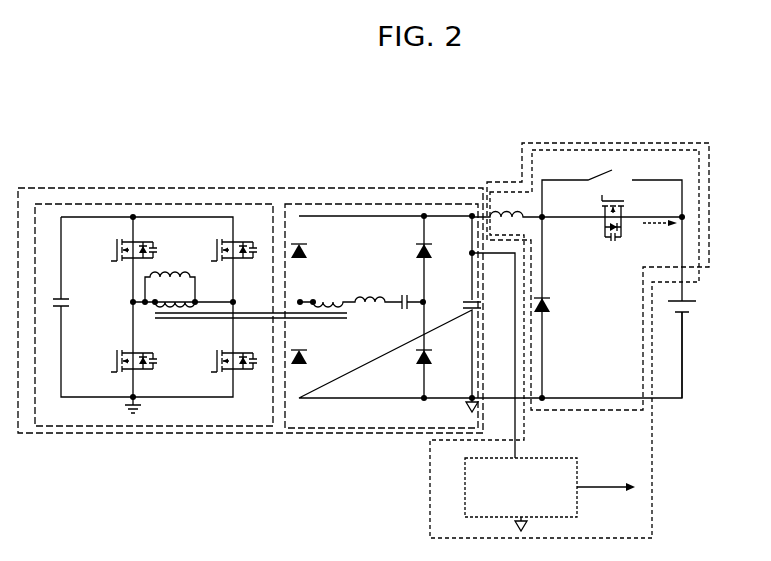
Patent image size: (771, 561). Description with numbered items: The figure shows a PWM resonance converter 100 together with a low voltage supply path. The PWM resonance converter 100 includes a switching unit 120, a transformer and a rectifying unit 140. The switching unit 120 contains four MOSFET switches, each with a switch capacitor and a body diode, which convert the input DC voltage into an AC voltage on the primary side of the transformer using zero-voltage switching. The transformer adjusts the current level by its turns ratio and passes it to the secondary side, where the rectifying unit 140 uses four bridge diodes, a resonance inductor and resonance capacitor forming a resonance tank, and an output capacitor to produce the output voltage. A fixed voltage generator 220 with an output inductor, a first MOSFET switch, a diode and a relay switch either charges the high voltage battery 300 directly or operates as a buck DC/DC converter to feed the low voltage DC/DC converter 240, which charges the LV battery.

The PWM resonance converter 100 is at (112, 188).
The switching unit 120 is at (188, 204).
The rectifying unit 140 is at (370, 204).
The fixed voltage generator 220 is at (592, 412).
The low voltage DC/DC converter 240 is at (580, 504).
The high voltage battery 300 is at (717, 295).